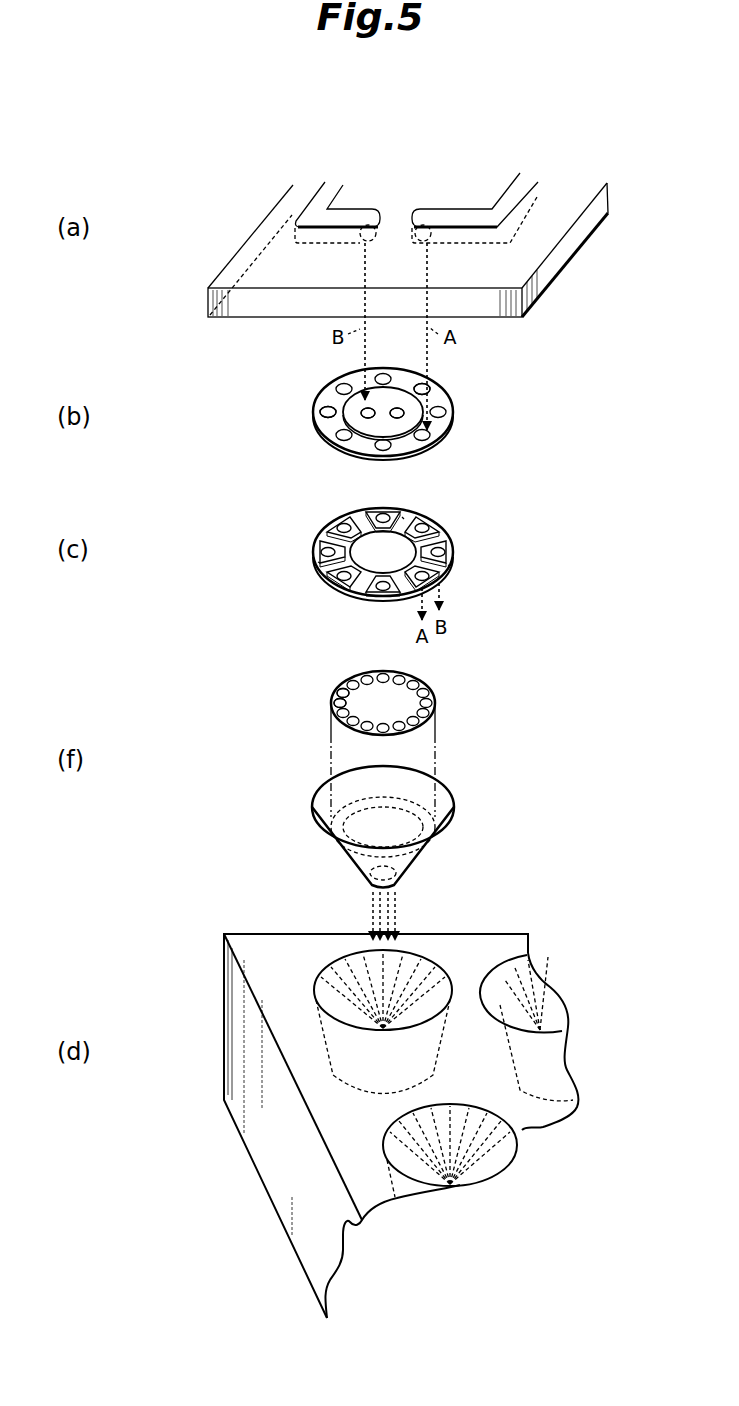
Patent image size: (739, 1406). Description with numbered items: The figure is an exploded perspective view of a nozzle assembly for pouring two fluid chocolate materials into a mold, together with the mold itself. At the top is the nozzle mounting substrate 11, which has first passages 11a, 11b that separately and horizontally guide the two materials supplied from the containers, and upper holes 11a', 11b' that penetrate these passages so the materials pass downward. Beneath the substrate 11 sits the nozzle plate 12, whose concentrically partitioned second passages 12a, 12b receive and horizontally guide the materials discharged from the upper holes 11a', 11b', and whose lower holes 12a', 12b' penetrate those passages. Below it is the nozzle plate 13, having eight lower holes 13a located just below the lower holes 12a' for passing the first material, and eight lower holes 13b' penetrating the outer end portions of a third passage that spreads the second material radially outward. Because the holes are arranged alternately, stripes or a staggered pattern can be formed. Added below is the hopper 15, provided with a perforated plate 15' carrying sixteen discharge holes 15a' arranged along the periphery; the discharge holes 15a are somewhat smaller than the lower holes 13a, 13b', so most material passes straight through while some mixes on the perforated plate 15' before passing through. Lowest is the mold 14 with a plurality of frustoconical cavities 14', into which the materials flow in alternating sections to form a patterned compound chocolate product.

The nozzle mounting substrate 11 is at (574, 289).
The first passage 11a is at (475, 198).
The first passage 11b is at (343, 198).
The upper hole 11a' is at (474, 313).
The upper hole 11b' is at (335, 312).
The nozzle plate 12 is at (478, 421).
The second passage 12a is at (409, 410).
The lower hole 12a' is at (369, 384).
The second passage 12b is at (385, 376).
The lower hole 12b' is at (383, 443).
The nozzle plate 13 is at (488, 523).
The lower hole 13a is at (383, 509).
The lower hole 13b' is at (387, 542).
The mold 14 is at (369, 1126).
The cavity 14' is at (455, 984).
The hopper 15 is at (418, 827).
The perforated plate 15' is at (419, 733).
The fiber holes 15a is at (417, 703).
The discharge hole 15a' is at (318, 674).